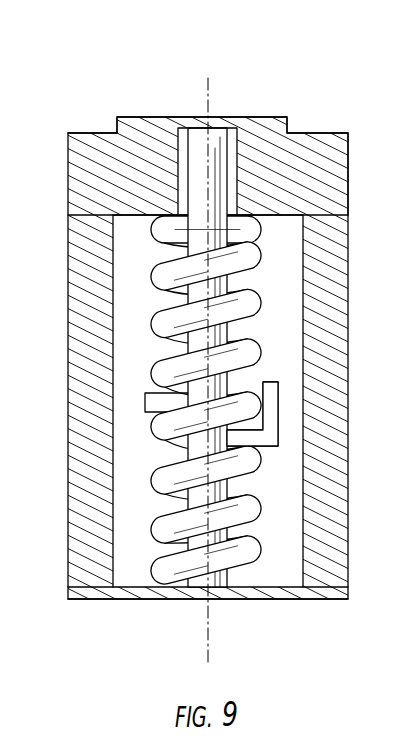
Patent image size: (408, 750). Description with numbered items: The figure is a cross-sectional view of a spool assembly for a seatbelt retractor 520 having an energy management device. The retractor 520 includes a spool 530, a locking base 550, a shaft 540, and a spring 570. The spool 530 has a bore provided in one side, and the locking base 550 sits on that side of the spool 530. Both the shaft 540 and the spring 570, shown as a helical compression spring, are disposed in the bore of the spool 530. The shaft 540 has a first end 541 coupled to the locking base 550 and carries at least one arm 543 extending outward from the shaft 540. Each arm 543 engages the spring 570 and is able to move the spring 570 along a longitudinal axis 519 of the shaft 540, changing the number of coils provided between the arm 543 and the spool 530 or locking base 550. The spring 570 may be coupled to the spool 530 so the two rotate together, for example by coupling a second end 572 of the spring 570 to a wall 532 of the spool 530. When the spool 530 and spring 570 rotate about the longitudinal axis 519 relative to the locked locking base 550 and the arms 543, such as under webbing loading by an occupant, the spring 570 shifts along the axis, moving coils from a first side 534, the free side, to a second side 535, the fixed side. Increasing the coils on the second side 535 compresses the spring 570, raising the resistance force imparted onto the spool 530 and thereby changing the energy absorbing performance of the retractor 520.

The longitudinal axis 519 is at (208, 650).
The retractor 520 is at (208, 72).
The spool 530 is at (332, 477).
The wall 532 is at (175, 593).
The first side 534 is at (130, 345).
The second side 535 is at (137, 518).
The shaft 540 is at (160, 263).
The first end 541 is at (200, 140).
The arm 543 is at (145, 402).
The locking base 550 is at (267, 130).
The spring 570 is at (260, 262).
The second end 572 is at (140, 578).